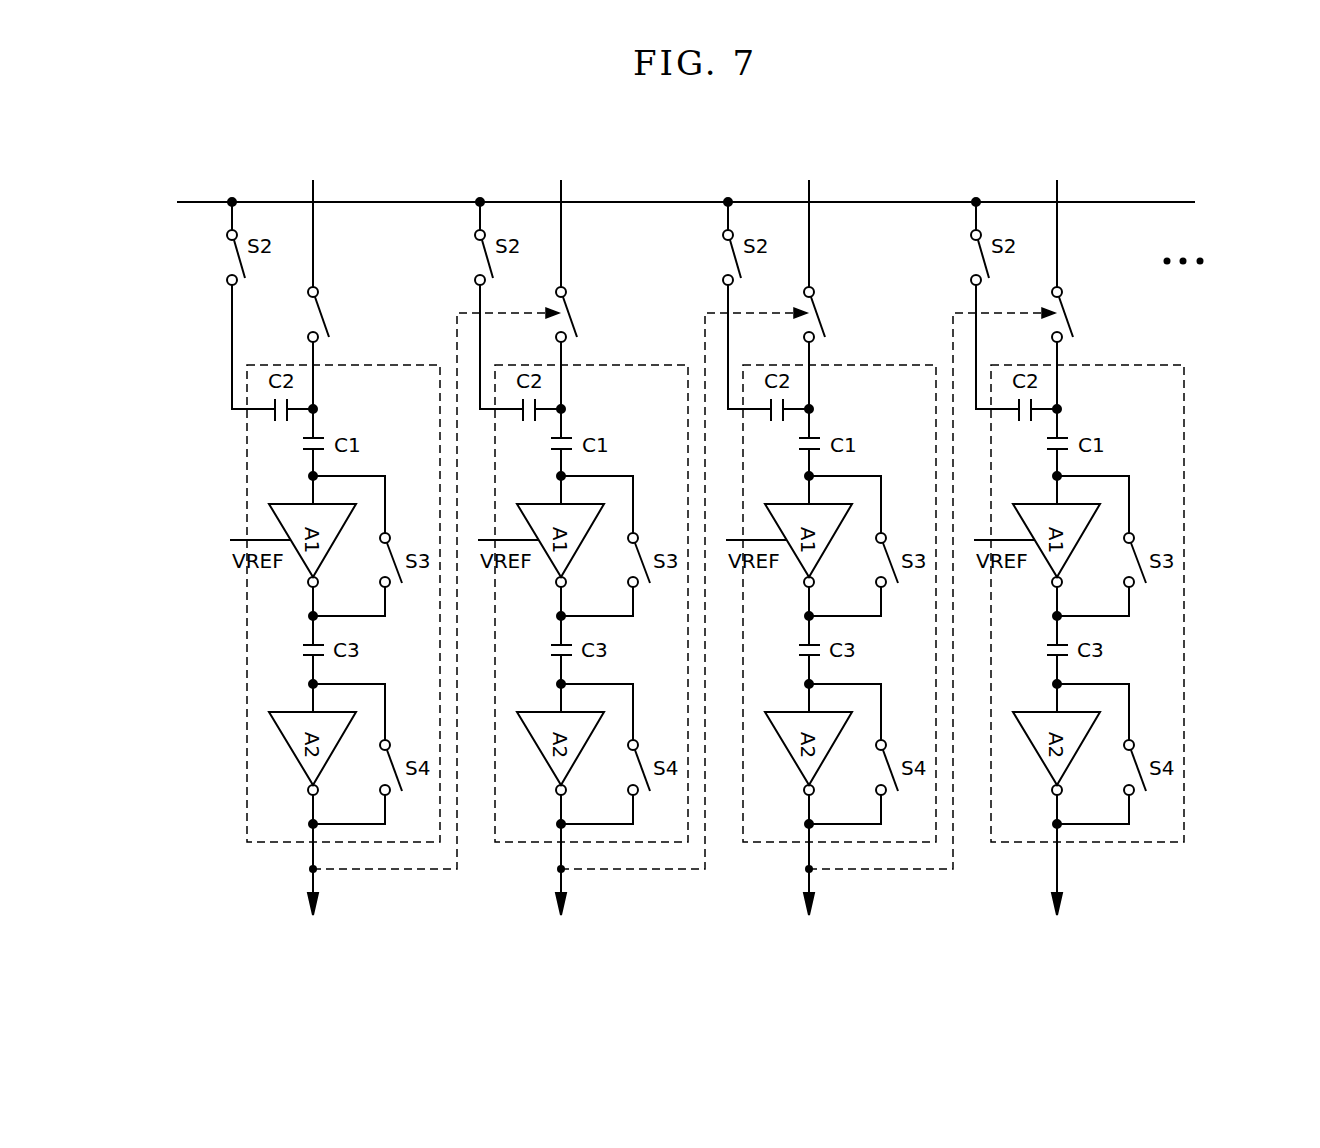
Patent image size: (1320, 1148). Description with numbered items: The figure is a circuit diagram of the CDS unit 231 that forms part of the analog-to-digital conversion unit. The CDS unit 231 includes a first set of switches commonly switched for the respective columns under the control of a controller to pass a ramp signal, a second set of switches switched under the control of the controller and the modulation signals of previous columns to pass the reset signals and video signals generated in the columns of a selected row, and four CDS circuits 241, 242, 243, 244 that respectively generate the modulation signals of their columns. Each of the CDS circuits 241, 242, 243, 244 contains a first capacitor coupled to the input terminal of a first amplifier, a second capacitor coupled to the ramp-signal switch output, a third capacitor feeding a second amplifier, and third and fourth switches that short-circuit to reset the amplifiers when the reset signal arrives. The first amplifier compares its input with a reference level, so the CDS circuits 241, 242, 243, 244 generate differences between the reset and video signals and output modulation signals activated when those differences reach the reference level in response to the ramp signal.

The CDS unit 231 is at (1233, 173).
The CDS circuit 241 is at (393, 562).
The CDS circuit 242 is at (641, 562).
The CDS circuit 243 is at (889, 562).
The CDS circuit 244 is at (1077, 562).